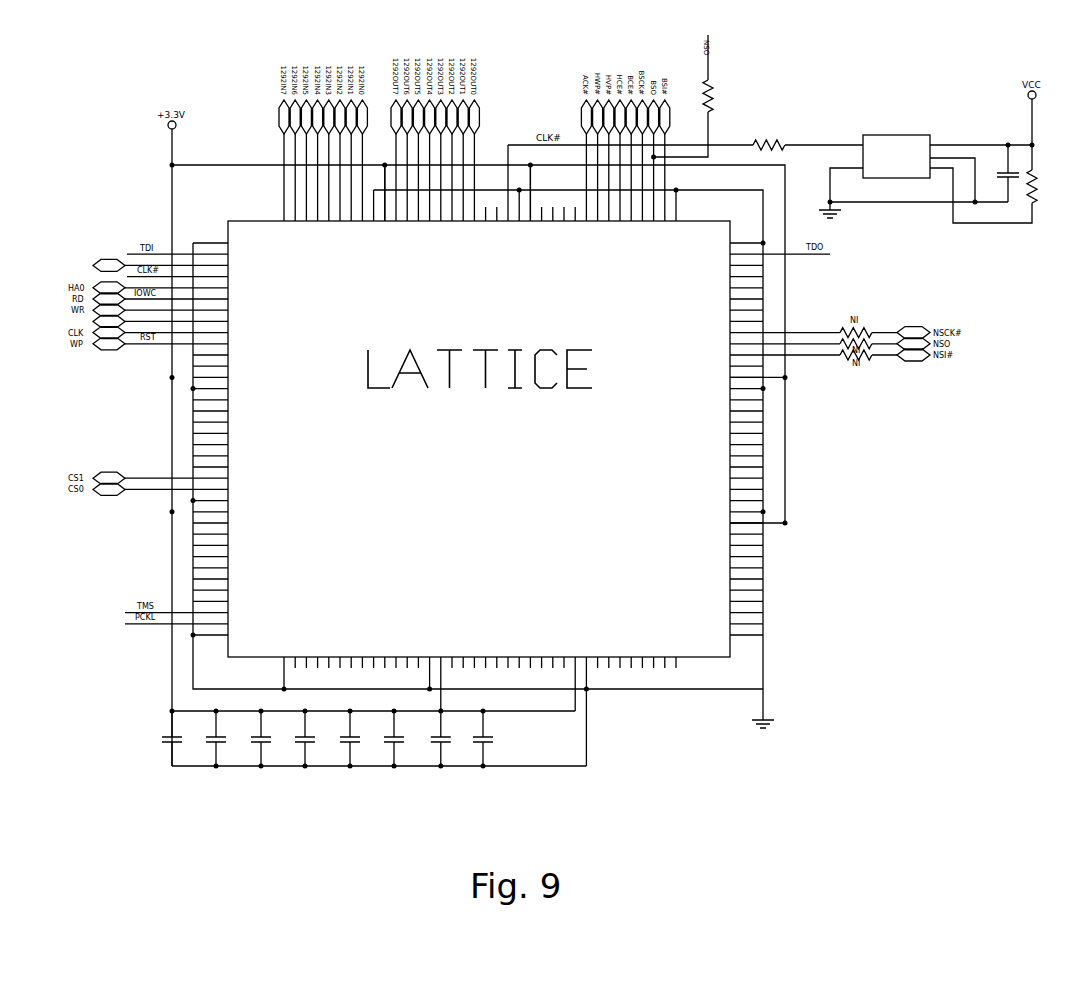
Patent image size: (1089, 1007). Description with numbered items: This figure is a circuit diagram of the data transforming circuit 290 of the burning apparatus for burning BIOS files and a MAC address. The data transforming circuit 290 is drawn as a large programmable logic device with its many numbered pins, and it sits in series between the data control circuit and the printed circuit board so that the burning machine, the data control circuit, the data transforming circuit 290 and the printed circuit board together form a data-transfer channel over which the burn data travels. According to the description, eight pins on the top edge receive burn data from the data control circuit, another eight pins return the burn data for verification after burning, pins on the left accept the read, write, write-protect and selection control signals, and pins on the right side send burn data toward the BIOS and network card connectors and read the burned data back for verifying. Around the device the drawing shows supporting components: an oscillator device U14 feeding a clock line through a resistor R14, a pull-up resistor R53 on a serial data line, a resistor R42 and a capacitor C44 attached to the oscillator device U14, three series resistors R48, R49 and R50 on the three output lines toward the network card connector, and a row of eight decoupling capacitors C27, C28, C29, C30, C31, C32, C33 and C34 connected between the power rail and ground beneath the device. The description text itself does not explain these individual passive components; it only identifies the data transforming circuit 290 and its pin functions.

The data transforming circuit 290 is at (718, 648).
The LTC1799 oscillator U14 is at (894, 161).
The resistor R53 is at (718, 96).
The resistor R14 is at (763, 137).
The resistor R42 is at (1044, 186).
The capacitor C44 is at (1002, 173).
The resistor R48 is at (841, 330).
The resistor R49 is at (841, 341).
The resistor R50 is at (841, 352).
The decoupling capacitor C27 is at (179, 738).
The decoupling capacitor C28 is at (223, 738).
The decoupling capacitor C29 is at (268, 738).
The decoupling capacitor C30 is at (312, 738).
The decoupling capacitor C31 is at (357, 738).
The decoupling capacitor C32 is at (401, 738).
The decoupling capacitor C33 is at (448, 738).
The decoupling capacitor C34 is at (490, 738).